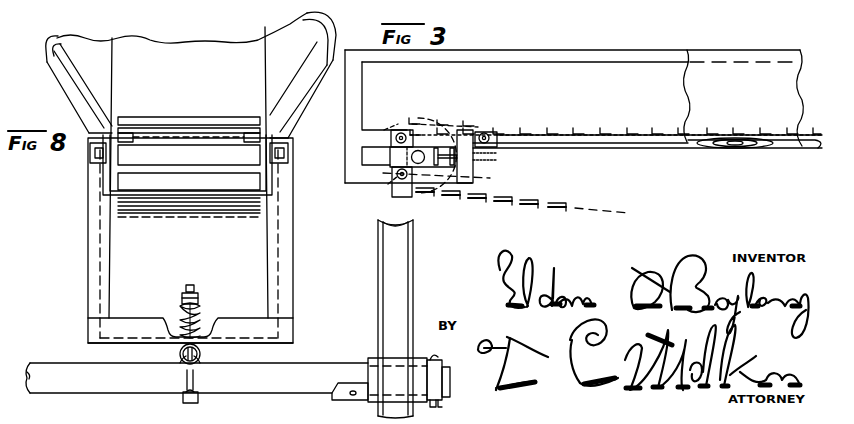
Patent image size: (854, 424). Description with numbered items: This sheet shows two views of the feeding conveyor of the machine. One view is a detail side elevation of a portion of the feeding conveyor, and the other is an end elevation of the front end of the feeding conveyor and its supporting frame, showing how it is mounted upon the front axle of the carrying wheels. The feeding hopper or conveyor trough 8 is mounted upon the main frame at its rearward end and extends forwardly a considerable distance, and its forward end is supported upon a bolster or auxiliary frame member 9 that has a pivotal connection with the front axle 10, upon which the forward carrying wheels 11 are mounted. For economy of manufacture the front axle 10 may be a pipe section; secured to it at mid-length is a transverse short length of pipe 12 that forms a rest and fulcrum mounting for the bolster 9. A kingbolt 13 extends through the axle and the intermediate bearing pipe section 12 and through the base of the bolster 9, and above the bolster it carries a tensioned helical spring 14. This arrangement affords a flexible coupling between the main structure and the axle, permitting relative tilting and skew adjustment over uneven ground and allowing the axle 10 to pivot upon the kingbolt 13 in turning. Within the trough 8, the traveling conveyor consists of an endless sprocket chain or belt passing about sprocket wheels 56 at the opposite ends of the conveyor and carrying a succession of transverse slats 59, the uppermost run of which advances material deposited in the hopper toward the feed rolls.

In FIG. 8, the feeding hopper or conveyor trough 8 is at (191, 165).
In FIG. 3, the feeding hopper or conveyor trough 8 is at (574, 116).
In FIG. 8, the bolster or auxiliary frame member 9 is at (284, 232).
In FIG. 8, the front axle 10 is at (197, 383).
In FIG. 8, the forward carrying wheels 11 is at (393, 278).
In FIG. 8, the transverse short length of pipe 12 is at (202, 353).
In FIG. 8, the kingbolt 13 is at (195, 288).
In FIG. 8, the tensioned helical spring 14 is at (203, 316).
In FIG. 3, the sprocket wheels 56 is at (478, 183).
In FIG. 8, the transverse slats 59 is at (175, 155).
In FIG. 3, the transverse slats 59 is at (563, 207).